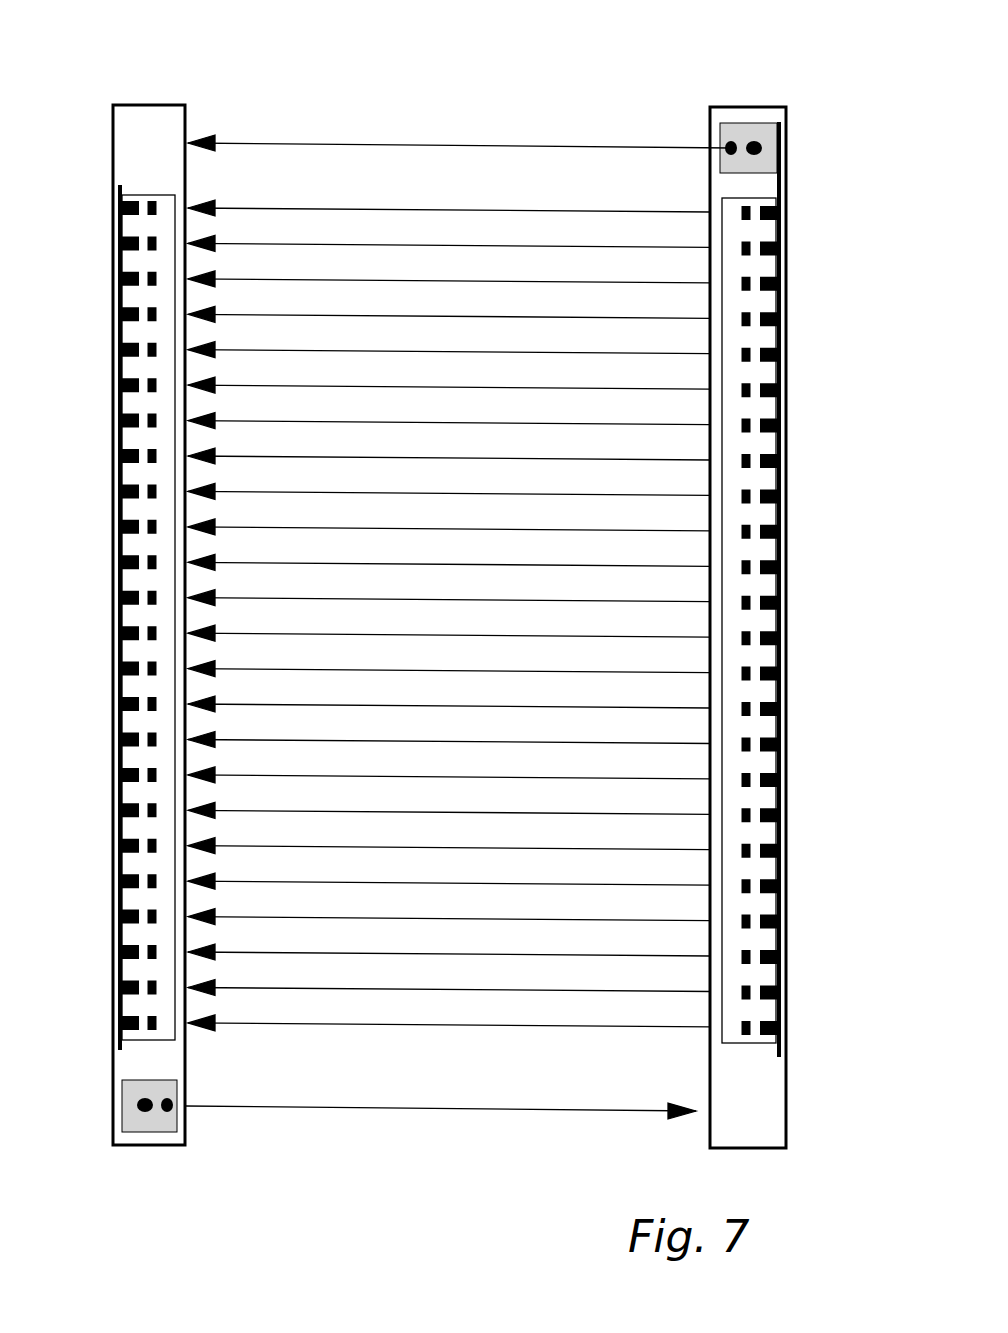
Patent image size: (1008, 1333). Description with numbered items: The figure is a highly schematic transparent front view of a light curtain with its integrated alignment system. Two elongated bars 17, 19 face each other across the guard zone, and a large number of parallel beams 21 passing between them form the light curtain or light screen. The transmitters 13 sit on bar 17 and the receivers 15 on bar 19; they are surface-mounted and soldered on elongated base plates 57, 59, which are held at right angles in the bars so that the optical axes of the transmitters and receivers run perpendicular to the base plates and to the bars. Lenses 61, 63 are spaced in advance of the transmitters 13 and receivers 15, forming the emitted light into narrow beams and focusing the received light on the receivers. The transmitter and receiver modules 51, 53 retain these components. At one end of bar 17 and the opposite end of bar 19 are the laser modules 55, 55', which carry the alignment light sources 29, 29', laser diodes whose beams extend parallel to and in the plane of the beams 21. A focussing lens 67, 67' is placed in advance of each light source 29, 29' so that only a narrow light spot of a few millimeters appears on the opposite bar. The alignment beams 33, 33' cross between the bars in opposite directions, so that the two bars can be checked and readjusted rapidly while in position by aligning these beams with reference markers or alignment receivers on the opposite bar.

The transmitter 13 is at (770, 325).
The receiver 15 is at (131, 718).
The bar 17 is at (770, 1148).
The bar 19 is at (140, 104).
The beams 21 is at (573, 282).
The light source 29 is at (803, 113).
The light source 29' is at (98, 1077).
The control line 33 is at (459, 114).
The control line 33' is at (441, 1145).
The module 51 is at (760, 1044).
The module 53 is at (148, 195).
The module 55 is at (796, 160).
The module 55' is at (175, 1141).
The base plate 57 is at (779, 624).
The base plate 59 is at (120, 588).
The lens 61 is at (746, 392).
The lens 63 is at (153, 788).
The focussing lens 67 is at (725, 84).
The focussing lens 67' is at (219, 1131).